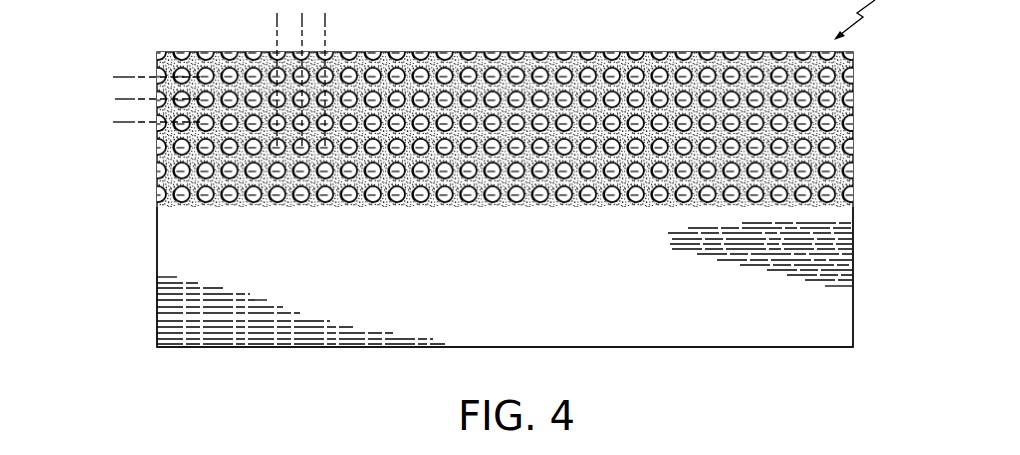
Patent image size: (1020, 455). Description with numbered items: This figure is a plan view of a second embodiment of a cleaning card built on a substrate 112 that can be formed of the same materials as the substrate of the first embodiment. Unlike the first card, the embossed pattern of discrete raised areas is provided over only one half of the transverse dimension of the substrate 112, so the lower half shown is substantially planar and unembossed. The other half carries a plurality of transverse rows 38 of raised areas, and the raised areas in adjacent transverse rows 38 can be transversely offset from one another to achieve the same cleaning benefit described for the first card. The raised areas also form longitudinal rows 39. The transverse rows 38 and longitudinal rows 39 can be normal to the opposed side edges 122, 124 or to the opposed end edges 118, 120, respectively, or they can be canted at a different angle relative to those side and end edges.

The transverse rows 38 is at (325, 13).
The longitudinal rows 39 is at (113, 122).
The substrate 112 is at (726, 50).
The end edge 118 is at (855, 215).
The end edge 120 is at (157, 222).
The side edge 122 is at (423, 52).
The side edge 124 is at (352, 348).